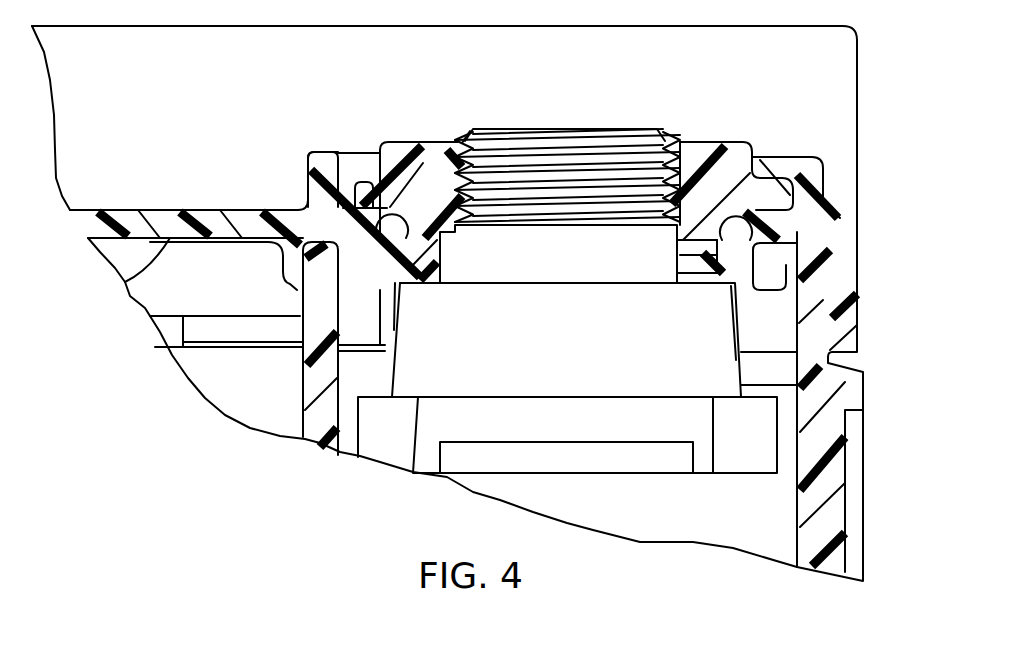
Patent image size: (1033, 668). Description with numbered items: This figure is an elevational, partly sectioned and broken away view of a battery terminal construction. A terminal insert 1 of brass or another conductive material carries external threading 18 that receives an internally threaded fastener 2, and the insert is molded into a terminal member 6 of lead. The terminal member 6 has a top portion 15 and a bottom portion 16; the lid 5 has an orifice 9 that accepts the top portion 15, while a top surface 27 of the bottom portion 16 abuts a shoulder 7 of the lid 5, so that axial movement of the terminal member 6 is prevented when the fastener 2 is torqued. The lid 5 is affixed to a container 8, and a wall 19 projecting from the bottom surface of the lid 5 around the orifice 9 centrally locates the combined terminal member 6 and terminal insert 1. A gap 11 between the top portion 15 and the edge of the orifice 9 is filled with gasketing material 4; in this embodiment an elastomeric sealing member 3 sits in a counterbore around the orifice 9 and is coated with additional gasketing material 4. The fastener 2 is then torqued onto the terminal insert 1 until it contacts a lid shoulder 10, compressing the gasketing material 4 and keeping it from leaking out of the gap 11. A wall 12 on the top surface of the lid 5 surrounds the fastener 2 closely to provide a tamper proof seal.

The terminal insert 1 is at (593, 130).
The fastener 2 is at (712, 177).
The elastomeric sealing member 3 is at (737, 232).
The gasketing material 4 is at (833, 222).
The lid 5 is at (847, 287).
The terminal member 6 is at (738, 478).
The shoulder 7 is at (400, 278).
The container 8 is at (820, 495).
The orifice 9 is at (416, 288).
The lid shoulder 10 is at (335, 168).
The gap 11 is at (453, 285).
The wall 12 is at (313, 193).
The top portion 15 is at (508, 262).
The bottom portion 16 is at (622, 367).
The external threading 18 is at (468, 143).
The wall 19 is at (800, 322).
The top surface 27 is at (693, 273).